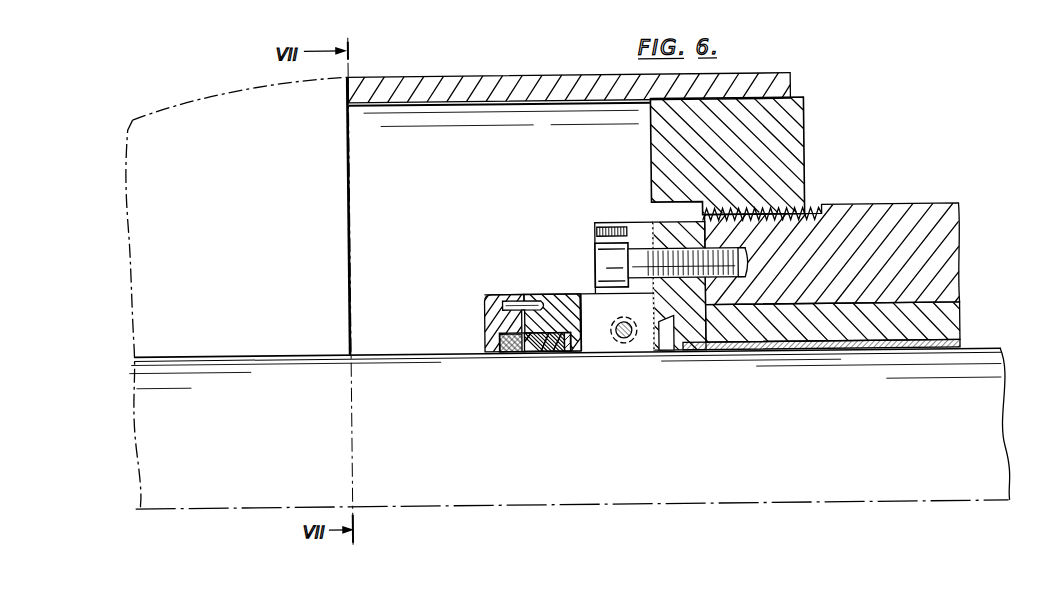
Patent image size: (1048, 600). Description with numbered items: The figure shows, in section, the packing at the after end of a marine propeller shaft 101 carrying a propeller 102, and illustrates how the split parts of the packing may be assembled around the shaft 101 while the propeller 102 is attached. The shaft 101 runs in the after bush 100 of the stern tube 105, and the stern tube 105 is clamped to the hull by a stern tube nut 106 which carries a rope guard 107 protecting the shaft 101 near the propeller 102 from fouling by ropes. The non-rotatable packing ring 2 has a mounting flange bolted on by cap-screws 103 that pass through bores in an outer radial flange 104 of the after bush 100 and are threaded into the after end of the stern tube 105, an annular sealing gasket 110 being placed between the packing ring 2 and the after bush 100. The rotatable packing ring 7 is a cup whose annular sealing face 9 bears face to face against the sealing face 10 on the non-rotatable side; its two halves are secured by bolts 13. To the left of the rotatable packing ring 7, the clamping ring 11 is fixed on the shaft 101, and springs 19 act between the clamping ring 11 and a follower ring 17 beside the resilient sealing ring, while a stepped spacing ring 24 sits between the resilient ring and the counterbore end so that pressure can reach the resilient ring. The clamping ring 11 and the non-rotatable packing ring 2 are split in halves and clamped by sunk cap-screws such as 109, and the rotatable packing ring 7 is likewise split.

The non-rotatable packing ring 2 is at (638, 229).
The rotatable packing ring 7 is at (563, 301).
The annular sealing face 9 is at (575, 351).
The sealing face 10 is at (581, 322).
The clamping ring 11 is at (484, 300).
The bolts 13 is at (540, 351).
The follower ring 17 is at (527, 351).
The springs 19 is at (505, 351).
The stepped spacing ring 24 is at (566, 351).
The after bush 100 is at (940, 328).
The shaft 101 is at (597, 473).
The propeller 102 is at (210, 128).
The cap-screws 103 is at (607, 258).
The outer radial flange 104 is at (670, 226).
The stern tube 105 is at (945, 218).
The stern tube nut 106 is at (800, 178).
The rope guard 107 is at (530, 88).
The sunk cap-screws 109 is at (630, 340).
The annular sealing gasket 110 is at (681, 349).